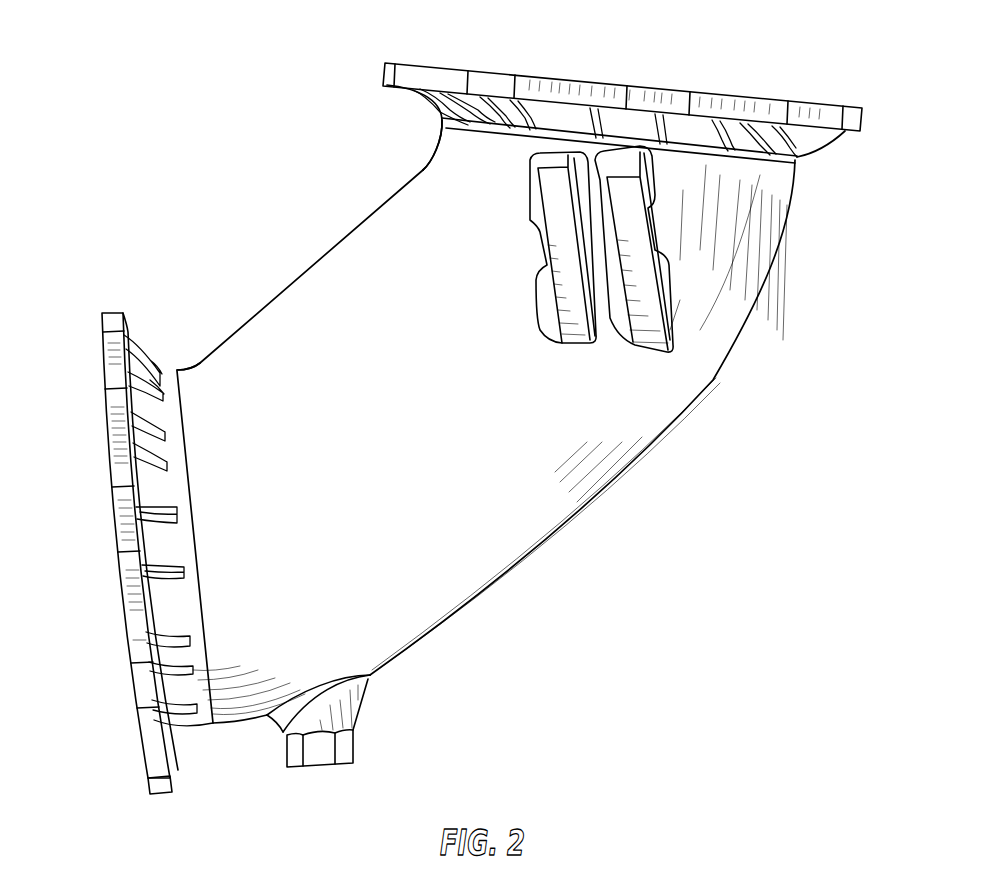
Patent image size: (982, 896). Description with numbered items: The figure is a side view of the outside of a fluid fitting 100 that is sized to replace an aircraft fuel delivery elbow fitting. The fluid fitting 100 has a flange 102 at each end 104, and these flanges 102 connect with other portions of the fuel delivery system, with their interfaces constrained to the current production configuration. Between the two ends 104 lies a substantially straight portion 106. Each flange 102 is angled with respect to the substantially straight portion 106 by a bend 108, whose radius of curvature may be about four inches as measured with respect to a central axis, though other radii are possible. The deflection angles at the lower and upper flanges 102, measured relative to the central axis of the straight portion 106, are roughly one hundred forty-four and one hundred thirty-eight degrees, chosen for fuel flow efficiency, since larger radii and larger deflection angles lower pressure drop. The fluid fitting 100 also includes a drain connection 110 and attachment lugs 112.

The fluid fitting 100 is at (150, 86).
The flange 102 is at (812, 100).
The end 104 is at (683, 52).
The substantially straight portion 106 is at (527, 541).
The bend 108 is at (423, 153).
The drain connection 110 is at (360, 705).
The attachment lugs 112 is at (662, 368).